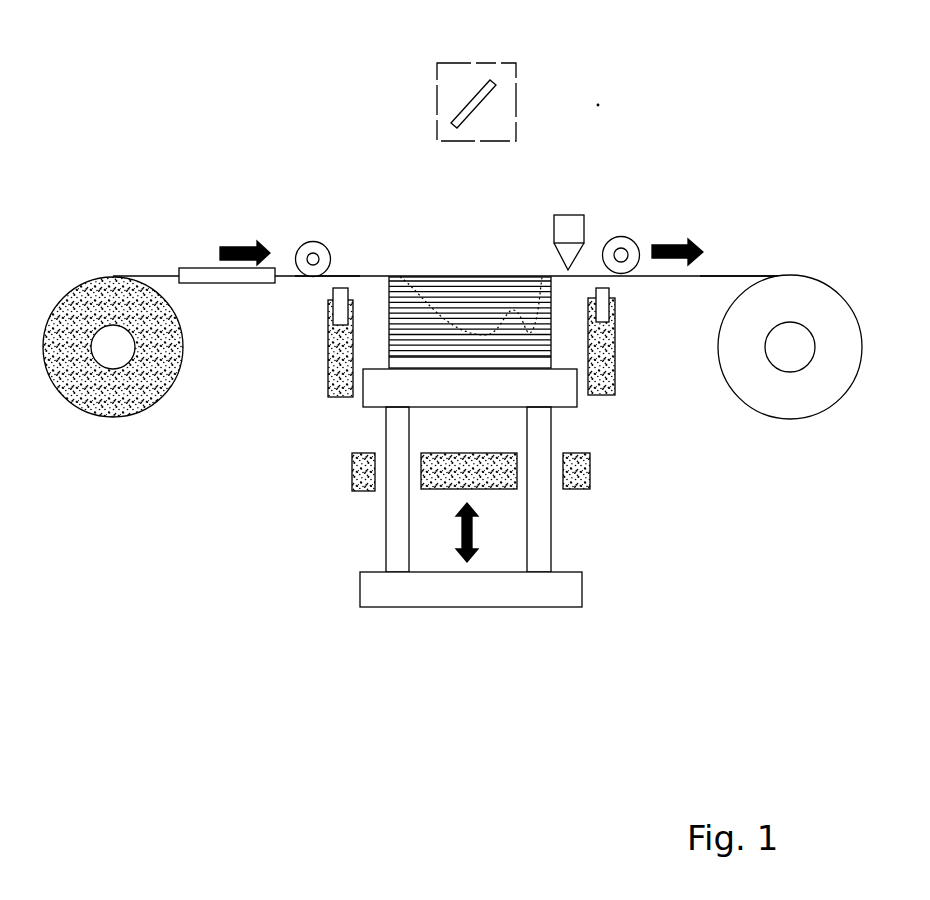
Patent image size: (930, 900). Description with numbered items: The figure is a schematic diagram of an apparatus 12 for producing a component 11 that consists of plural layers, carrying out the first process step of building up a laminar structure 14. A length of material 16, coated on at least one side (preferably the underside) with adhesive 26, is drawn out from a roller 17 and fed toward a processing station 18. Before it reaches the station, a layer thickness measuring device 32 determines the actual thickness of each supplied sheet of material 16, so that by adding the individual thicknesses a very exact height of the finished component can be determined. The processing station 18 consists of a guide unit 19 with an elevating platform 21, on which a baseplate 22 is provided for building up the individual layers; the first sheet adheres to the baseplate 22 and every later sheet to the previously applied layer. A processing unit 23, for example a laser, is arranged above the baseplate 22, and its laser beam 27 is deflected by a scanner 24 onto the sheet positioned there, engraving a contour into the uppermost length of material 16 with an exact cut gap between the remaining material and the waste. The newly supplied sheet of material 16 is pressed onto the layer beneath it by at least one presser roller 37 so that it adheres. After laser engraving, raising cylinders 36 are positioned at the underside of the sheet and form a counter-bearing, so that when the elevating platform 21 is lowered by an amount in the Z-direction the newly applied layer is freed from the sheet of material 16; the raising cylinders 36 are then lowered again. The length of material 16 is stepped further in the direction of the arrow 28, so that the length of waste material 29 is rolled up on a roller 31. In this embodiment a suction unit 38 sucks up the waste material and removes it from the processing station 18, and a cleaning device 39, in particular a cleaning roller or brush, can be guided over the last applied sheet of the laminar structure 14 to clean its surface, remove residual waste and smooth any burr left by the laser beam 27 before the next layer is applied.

The component 11 is at (380, 324).
The apparatus 12 is at (226, 477).
The laminar structure 14 is at (418, 307).
The length of material 16 is at (153, 276).
The roller 17 is at (102, 387).
The processing station 18 is at (464, 624).
The guide unit 19 is at (352, 475).
The elevating platform 21 is at (555, 395).
The baseplate 22 is at (530, 359).
The processing unit 23 is at (400, 93).
The scanner 24 is at (468, 88).
The adhesive 26 is at (327, 278).
The laser beam 27 is at (598, 105).
The arrow 28 is at (677, 240).
The length of waste material 29 is at (707, 273).
The roller 31 is at (795, 400).
The layer thickness measuring device 32 is at (197, 273).
The raising cylinders 36 is at (328, 357).
The presser roller 37 is at (313, 242).
The suction unit 38 is at (568, 232).
The cleaning device 39 is at (619, 247).